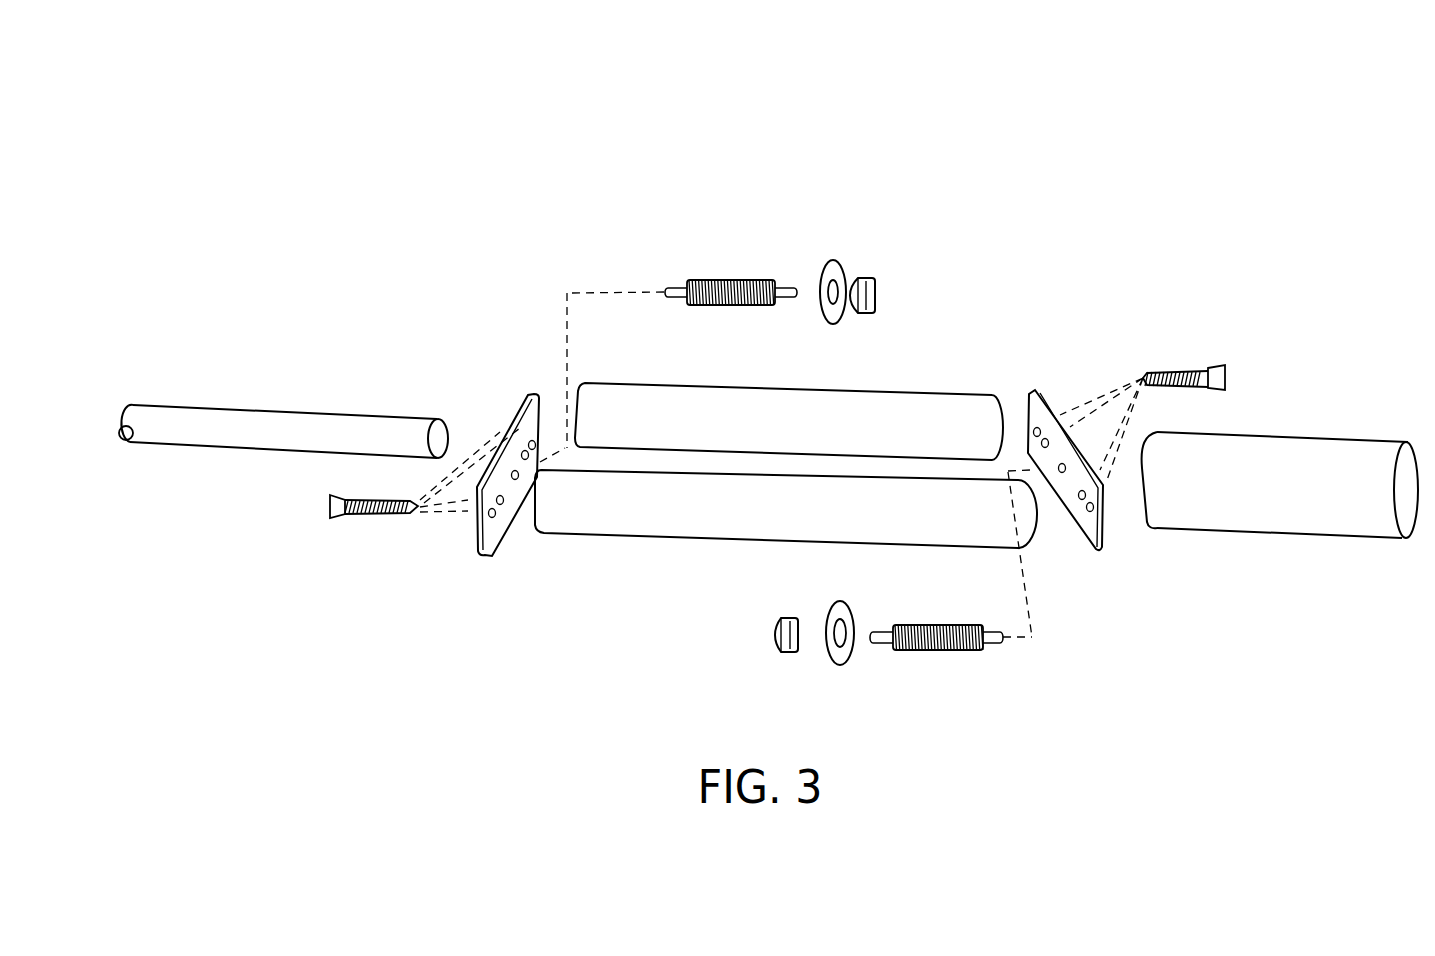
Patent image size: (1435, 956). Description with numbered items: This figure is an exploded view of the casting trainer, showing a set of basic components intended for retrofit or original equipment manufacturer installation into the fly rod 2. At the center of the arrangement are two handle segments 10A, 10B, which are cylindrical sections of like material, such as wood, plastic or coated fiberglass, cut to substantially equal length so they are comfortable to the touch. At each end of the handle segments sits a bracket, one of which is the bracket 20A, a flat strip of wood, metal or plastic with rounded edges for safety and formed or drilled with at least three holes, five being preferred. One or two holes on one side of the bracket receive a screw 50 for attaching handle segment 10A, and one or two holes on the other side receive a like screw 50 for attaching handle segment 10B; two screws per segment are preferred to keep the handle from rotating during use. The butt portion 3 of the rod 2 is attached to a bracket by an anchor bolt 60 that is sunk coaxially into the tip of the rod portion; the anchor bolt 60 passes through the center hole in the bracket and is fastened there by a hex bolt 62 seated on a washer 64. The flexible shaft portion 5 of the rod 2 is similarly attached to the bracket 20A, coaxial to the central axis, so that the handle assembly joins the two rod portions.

The fly rod 2 is at (507, 127).
The butt portion 3 is at (1317, 468).
The flexible shaft portion 5 is at (230, 427).
The handle segment 10A is at (607, 527).
The handle segment 10B is at (935, 400).
The bracket 20A is at (520, 392).
The screw 50 is at (357, 515).
The anchor bolt 60 is at (719, 280).
The hex bolt 62 is at (868, 275).
The washer 64 is at (835, 260).